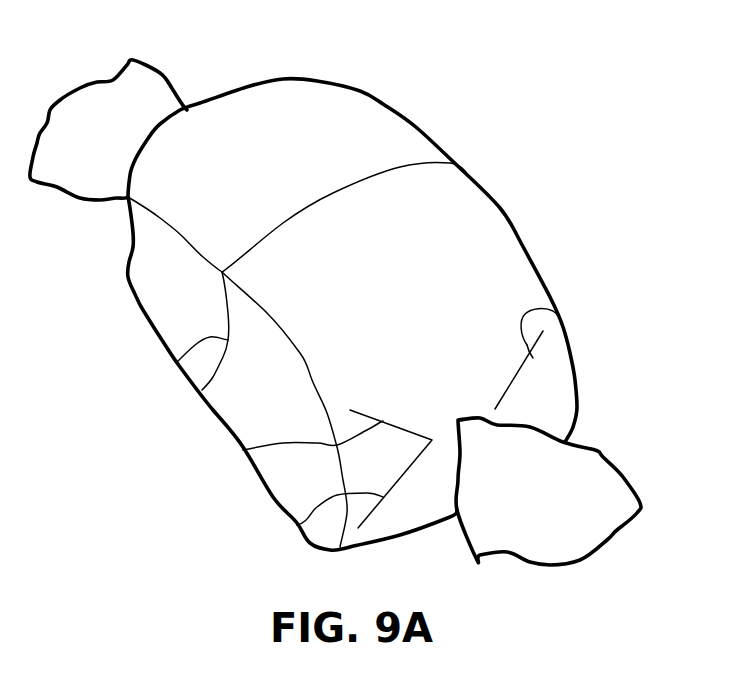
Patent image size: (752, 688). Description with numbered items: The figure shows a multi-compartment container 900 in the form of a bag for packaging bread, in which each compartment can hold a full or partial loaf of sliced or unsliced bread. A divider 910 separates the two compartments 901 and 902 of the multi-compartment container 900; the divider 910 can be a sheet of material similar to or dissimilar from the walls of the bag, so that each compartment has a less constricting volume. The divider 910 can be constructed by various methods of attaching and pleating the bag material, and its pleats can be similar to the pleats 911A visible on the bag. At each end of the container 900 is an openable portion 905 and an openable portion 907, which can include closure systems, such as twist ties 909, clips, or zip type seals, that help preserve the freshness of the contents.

The multi-compartment container 900 is at (417, 133).
The compartment 901 is at (338, 112).
The compartment 902 is at (500, 260).
The openable portion 905 is at (150, 118).
The openable portion 907 is at (533, 488).
The twist tie 909 is at (480, 410).
The divider 910 is at (180, 360).
The pleats 911A is at (343, 393).